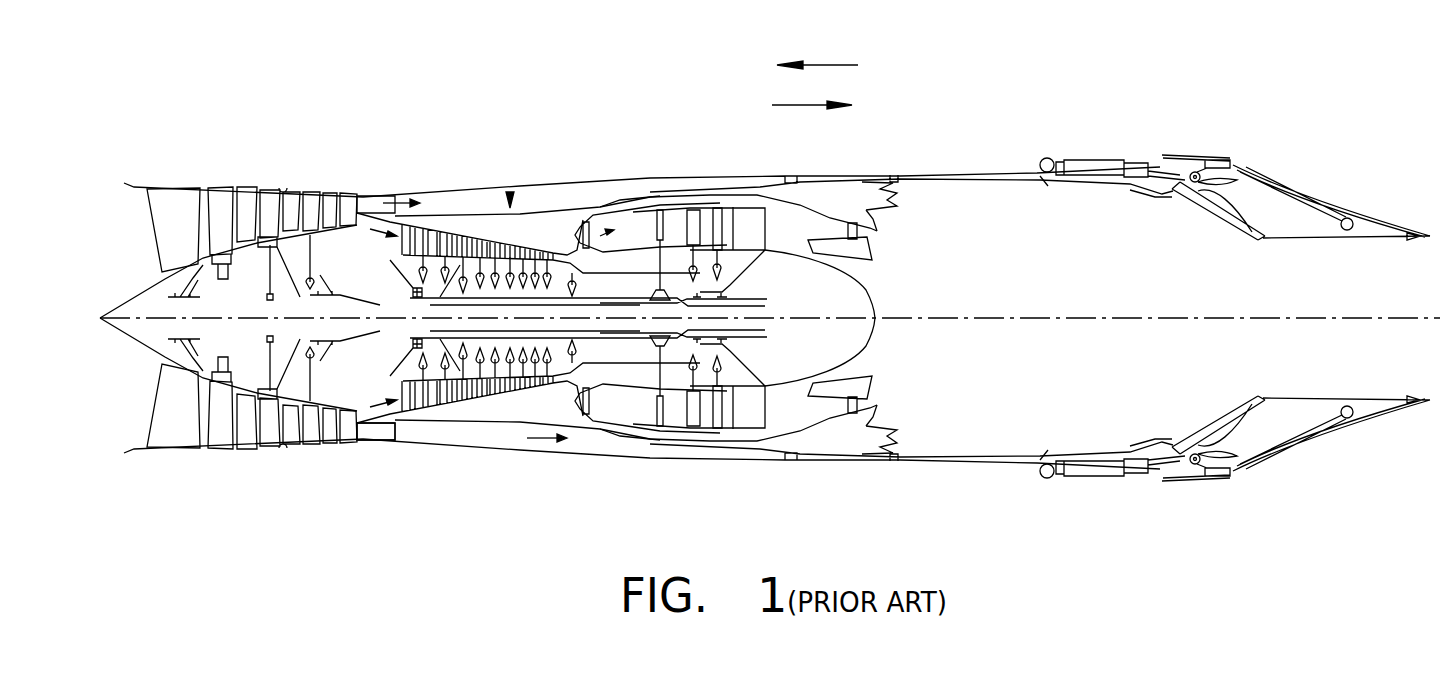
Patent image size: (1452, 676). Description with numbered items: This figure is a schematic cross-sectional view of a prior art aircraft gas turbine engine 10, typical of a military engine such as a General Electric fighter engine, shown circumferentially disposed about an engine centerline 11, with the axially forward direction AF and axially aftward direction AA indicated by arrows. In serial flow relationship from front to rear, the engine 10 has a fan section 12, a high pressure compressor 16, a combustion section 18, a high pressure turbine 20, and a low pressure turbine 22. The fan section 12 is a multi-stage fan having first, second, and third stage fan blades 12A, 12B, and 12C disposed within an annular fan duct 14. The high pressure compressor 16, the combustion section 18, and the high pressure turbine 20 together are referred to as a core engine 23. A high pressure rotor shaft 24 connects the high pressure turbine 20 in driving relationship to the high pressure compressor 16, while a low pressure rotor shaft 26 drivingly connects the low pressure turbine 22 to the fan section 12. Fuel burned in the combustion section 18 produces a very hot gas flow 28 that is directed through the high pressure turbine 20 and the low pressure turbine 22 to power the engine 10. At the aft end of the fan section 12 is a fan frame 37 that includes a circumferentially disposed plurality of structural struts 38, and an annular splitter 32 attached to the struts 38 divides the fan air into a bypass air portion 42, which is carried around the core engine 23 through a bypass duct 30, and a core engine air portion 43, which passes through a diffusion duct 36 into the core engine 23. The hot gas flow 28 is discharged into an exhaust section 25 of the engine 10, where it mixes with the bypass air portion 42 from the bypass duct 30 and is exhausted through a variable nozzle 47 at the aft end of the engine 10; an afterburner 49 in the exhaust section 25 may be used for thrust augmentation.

The gas turbine engine 10 is at (490, 477).
The engine centerline 11 is at (962, 322).
The fan section 12 is at (248, 186).
The first stage fan blade 12A is at (252, 300).
The second stage fan blade 12B is at (277, 302).
The third stage fan blade 12C is at (333, 252).
The annular fan duct 14 is at (283, 188).
The high pressure compressor 16 is at (470, 247).
The combustion section 18 is at (590, 226).
The high pressure turbine 20 is at (660, 208).
The low pressure turbine 22 is at (703, 212).
The core engine 23 is at (510, 195).
The high pressure rotor shaft 24 is at (585, 298).
The exhaust section 25 is at (1142, 284).
The low pressure rotor shaft 26 is at (647, 327).
The hot gas flow 28 is at (598, 232).
The bypass duct 30 is at (493, 198).
The annular splitter 32 is at (367, 190).
The diffusion duct 36 is at (378, 407).
The fan frame 37 is at (370, 447).
The structural struts 38 is at (400, 435).
The bypass air portion 42 is at (387, 197).
The core engine air portion 43 is at (368, 228).
The variable nozzle 47 is at (1283, 240).
The afterburner 49 is at (885, 218).
The axially forward direction AF is at (828, 64).
The axially aftward direction AA is at (803, 106).